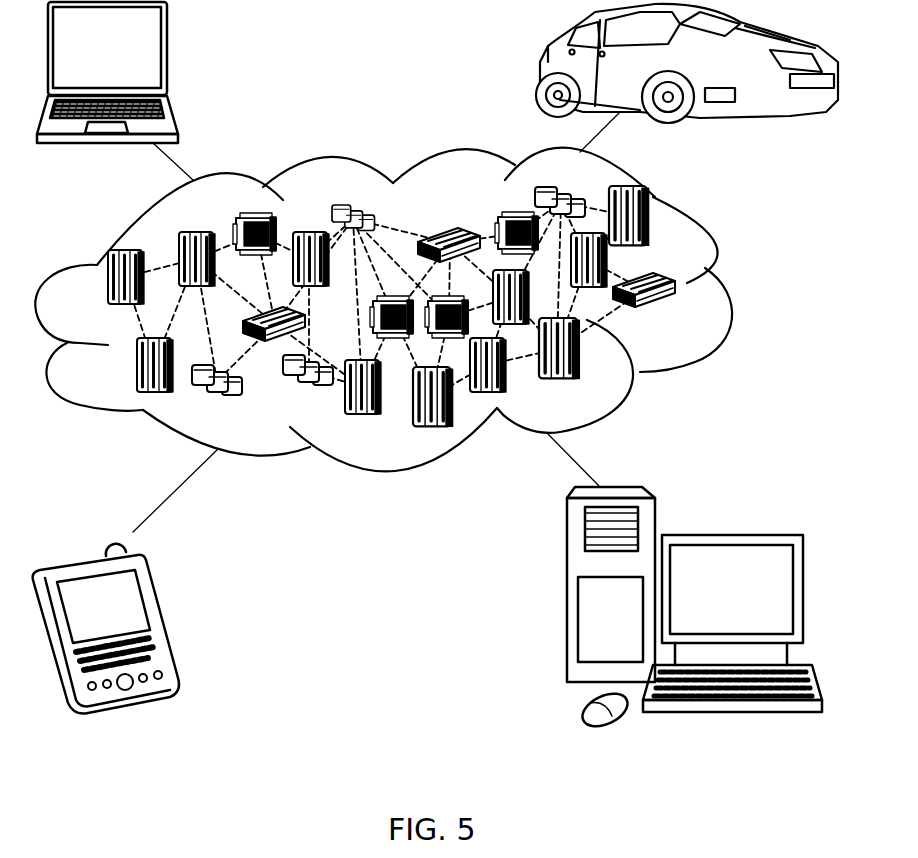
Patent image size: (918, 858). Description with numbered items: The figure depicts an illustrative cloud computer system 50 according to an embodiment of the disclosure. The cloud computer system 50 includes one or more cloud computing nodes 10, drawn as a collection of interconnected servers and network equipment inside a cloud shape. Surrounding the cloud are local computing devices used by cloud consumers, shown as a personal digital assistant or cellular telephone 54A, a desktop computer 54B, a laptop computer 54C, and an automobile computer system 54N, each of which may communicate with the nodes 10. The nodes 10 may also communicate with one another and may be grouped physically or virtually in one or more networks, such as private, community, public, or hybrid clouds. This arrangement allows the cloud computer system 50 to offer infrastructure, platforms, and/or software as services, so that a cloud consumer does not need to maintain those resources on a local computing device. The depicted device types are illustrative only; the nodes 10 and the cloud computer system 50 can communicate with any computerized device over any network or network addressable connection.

The cloud computing nodes 10 is at (692, 322).
The cloud computer system 50 is at (733, 290).
The personal digital assistant or cellular telephone 54A is at (158, 610).
The desktop computer 54B is at (730, 535).
The laptop computer 54C is at (168, 50).
The automobile computer system 54N is at (540, 68).